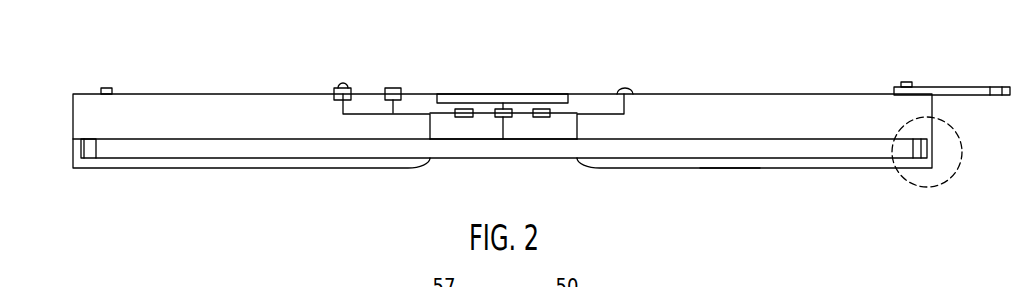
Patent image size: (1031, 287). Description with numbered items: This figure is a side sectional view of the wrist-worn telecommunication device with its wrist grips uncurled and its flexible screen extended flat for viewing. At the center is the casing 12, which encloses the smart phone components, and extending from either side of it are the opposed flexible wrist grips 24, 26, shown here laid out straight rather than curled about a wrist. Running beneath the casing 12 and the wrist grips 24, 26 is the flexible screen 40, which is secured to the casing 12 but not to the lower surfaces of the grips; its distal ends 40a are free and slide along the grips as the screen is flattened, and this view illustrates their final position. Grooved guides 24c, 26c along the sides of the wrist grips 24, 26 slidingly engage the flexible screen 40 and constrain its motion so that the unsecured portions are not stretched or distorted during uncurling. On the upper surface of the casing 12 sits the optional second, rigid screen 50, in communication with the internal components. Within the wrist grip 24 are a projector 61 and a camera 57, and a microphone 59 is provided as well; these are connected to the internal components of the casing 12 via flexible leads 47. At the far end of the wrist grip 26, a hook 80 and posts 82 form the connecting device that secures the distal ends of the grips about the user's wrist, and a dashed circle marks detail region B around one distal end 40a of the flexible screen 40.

The casing 12 is at (563, 120).
The flexible wrist grip 24 is at (190, 103).
The grooved guide 24c is at (220, 163).
The flexible wrist grip 26 is at (777, 107).
The grooved guide 26c is at (765, 170).
The flexible screen 40 is at (498, 152).
The distal end 40a is at (88, 148).
The flexible leads 47 is at (370, 114).
The second rigid screen 50 is at (525, 97).
The camera 57 is at (393, 87).
The microphone 59 is at (623, 88).
The projector 61 is at (336, 87).
The hook 80 is at (952, 87).
The posts 82 is at (107, 85).
The detail region B is at (935, 160).